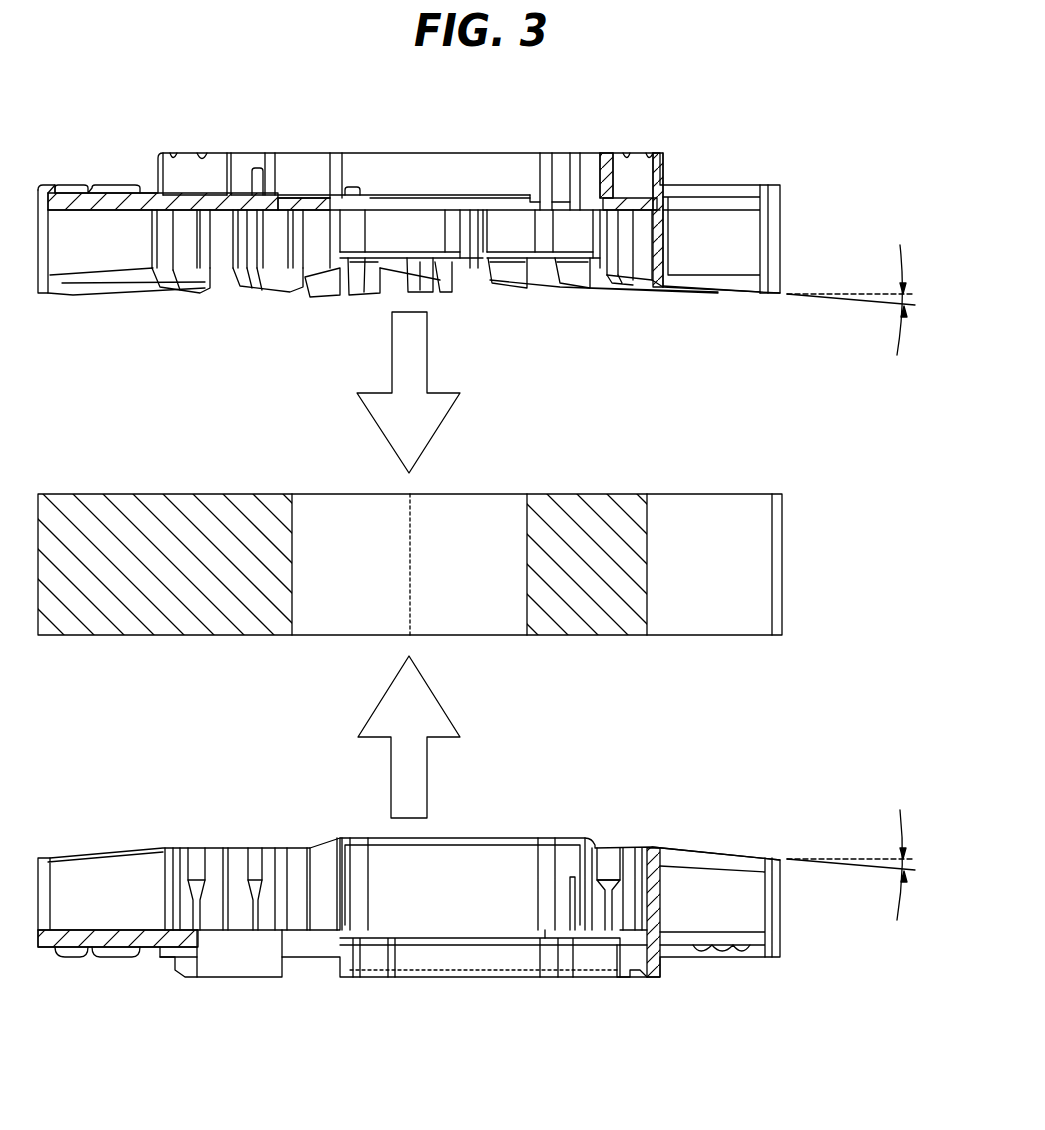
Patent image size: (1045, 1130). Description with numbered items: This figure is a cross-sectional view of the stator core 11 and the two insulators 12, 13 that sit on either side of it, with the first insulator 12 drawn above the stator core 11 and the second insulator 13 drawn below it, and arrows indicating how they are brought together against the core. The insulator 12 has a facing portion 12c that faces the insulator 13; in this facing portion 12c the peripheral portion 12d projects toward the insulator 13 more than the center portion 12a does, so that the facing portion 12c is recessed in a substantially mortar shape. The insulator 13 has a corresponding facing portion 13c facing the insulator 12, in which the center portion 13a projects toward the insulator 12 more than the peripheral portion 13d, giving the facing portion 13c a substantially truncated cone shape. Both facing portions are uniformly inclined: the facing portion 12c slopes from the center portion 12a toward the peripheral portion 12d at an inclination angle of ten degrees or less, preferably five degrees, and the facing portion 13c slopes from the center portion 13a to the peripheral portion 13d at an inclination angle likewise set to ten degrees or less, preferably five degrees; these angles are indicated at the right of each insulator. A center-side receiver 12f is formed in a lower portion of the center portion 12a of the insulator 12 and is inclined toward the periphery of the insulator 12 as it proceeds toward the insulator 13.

The stator core 11 is at (64, 452).
The insulator 12 is at (64, 114).
The center portion 12a is at (507, 300).
The facing portion 12c is at (571, 319).
The peripheral portion 12d is at (777, 295).
The center-side receiver 12f is at (347, 297).
The insulator 13 is at (64, 806).
The center portion 13a is at (585, 840).
The facing portion 13c is at (556, 769).
The peripheral portion 13d is at (780, 858).